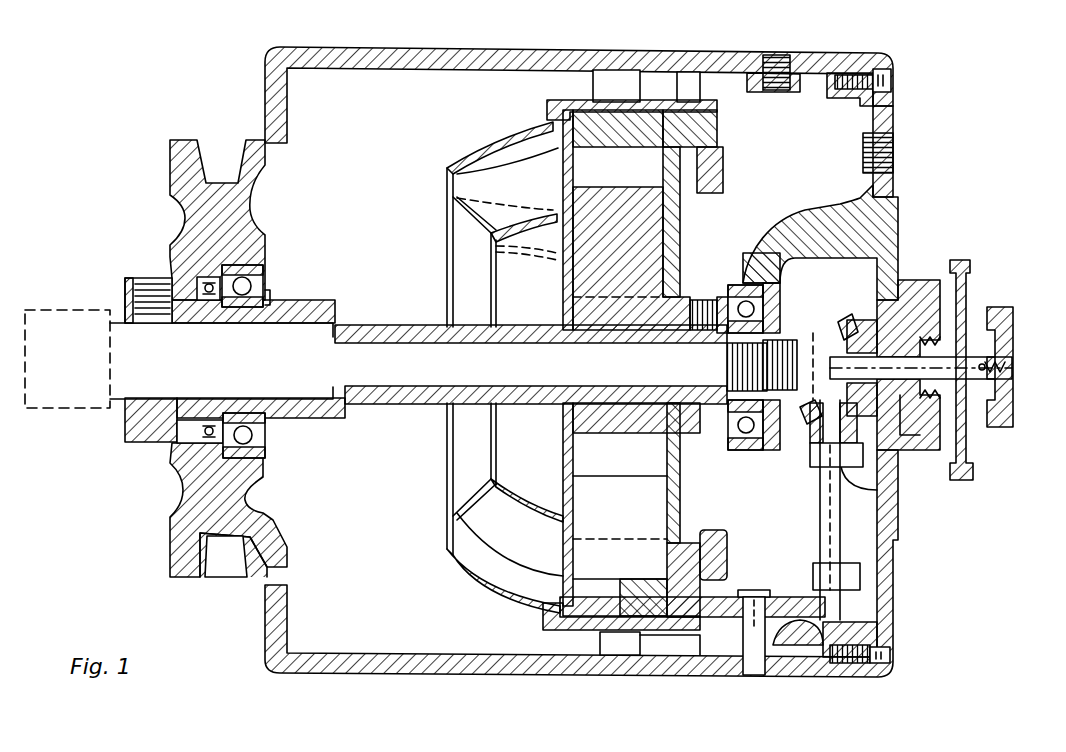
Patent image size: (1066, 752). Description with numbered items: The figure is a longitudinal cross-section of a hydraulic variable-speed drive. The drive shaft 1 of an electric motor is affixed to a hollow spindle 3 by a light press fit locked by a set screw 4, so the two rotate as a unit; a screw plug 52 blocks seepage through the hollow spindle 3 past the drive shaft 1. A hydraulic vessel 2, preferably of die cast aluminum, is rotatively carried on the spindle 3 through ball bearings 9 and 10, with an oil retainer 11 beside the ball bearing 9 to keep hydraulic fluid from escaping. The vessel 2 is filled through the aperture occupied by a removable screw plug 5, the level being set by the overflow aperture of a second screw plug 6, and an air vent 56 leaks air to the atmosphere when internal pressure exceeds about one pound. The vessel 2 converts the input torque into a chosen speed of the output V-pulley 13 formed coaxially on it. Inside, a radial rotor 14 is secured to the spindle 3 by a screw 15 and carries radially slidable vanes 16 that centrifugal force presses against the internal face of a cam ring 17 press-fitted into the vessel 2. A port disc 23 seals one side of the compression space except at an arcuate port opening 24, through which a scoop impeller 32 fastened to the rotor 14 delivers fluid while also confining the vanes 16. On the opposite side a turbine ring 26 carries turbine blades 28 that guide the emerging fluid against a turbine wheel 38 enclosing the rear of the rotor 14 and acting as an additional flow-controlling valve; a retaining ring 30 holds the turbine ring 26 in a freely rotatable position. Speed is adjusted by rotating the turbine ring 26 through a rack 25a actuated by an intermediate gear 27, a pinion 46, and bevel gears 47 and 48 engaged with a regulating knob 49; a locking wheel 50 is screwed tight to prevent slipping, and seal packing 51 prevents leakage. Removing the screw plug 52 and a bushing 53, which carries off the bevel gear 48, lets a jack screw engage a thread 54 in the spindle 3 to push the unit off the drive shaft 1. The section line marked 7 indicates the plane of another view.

The drive shaft 1 is at (96, 306).
The hydraulic vessel 2 is at (330, 672).
The spindle 3 is at (565, 690).
The set screw 4 is at (140, 278).
The screw plug 5 is at (780, 55).
The screw plug 6 is at (896, 150).
The section line 7 is at (703, 690).
The ball bearing 9 is at (262, 272).
The ball bearing 10 is at (782, 290).
The oil retainer 11 is at (202, 278).
The V-pulley 13 is at (205, 140).
The radial rotor 14 is at (655, 228).
The screw 15 is at (703, 298).
The vanes 16 is at (600, 486).
The cam ring 17 is at (592, 612).
The port disc 23 is at (555, 150).
The arcuate port opening 24 is at (560, 565).
The rack 25a is at (726, 597).
The turbine ring 26 is at (697, 530).
The intermediate gear 27 is at (693, 657).
The turbine blades 28 is at (722, 162).
The retaining ring 30 is at (720, 120).
The scoop impeller 32 is at (458, 228).
The turbine wheel 38 is at (722, 182).
The pinion 46 is at (800, 662).
The bevel gear 47 is at (808, 425).
The bevel gear 48 is at (842, 328).
The regulating knob 49 is at (995, 428).
The locking wheel 50 is at (940, 470).
The seal packing 51 is at (922, 445).
The screw plug 52 is at (797, 358).
The bushing 53 is at (930, 280).
The thread 54 is at (728, 368).
The air vent 56 is at (1004, 372).